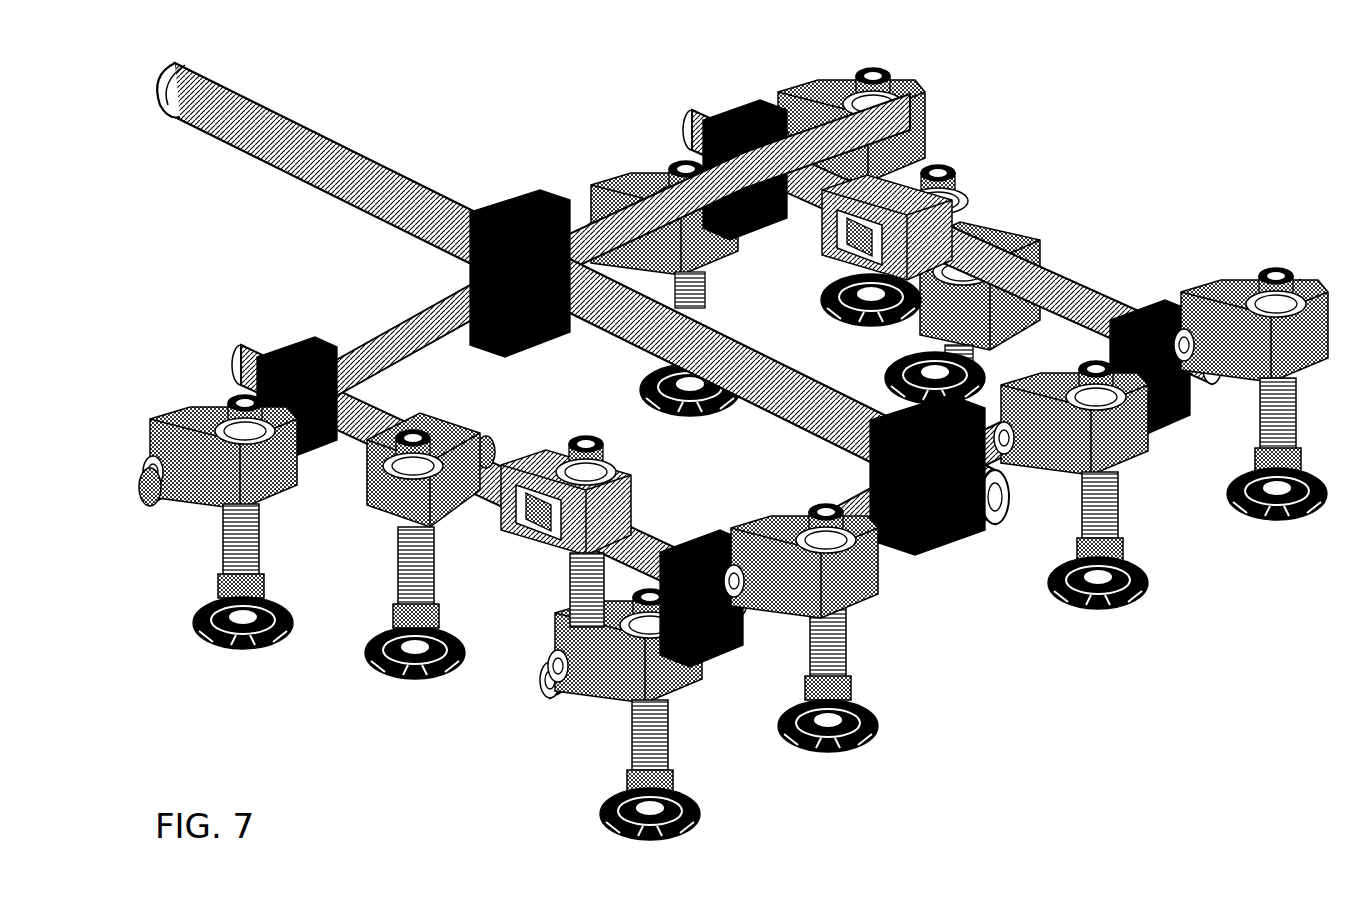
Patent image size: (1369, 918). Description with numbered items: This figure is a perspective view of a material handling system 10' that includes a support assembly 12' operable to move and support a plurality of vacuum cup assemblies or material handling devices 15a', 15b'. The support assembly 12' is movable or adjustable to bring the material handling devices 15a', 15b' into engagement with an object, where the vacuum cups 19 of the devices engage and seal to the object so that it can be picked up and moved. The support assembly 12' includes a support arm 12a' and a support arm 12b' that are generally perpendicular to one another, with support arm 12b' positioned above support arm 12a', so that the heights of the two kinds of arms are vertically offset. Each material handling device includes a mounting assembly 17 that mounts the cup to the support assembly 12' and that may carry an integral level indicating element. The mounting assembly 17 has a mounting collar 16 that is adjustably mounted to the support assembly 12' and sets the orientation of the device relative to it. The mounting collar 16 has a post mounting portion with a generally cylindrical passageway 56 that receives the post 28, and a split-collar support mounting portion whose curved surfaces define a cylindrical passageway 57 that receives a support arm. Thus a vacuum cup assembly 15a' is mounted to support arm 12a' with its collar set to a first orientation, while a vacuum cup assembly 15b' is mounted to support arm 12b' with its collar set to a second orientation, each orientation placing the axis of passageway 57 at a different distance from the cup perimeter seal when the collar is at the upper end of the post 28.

The material handling system 10' is at (857, 242).
The support assembly 12' is at (583, 293).
The support arm 12a' is at (720, 396).
The support arm 12b' is at (727, 363).
The vacuum cup assembly 15a' is at (1123, 485).
The vacuum cup assembly 15b' is at (529, 548).
The mounting collar 16 is at (440, 440).
The mounting assembly 17 is at (1236, 290).
The vacuum cup 19 is at (400, 662).
The post 28 is at (256, 530).
The passageway 56 is at (840, 556).
The passageway 57 is at (192, 483).